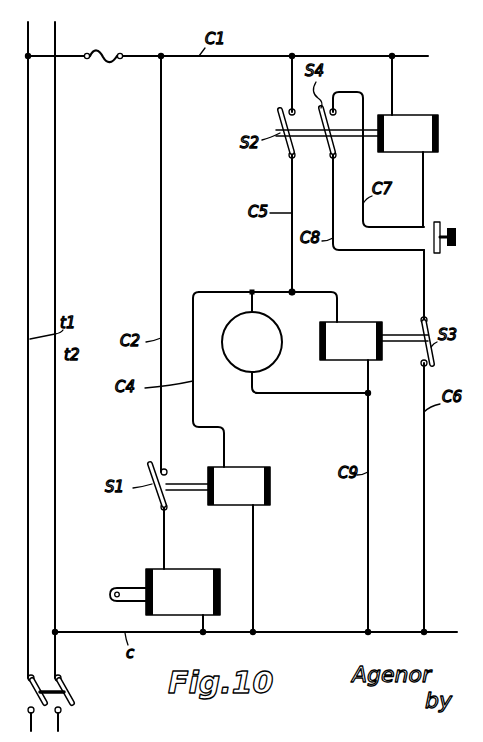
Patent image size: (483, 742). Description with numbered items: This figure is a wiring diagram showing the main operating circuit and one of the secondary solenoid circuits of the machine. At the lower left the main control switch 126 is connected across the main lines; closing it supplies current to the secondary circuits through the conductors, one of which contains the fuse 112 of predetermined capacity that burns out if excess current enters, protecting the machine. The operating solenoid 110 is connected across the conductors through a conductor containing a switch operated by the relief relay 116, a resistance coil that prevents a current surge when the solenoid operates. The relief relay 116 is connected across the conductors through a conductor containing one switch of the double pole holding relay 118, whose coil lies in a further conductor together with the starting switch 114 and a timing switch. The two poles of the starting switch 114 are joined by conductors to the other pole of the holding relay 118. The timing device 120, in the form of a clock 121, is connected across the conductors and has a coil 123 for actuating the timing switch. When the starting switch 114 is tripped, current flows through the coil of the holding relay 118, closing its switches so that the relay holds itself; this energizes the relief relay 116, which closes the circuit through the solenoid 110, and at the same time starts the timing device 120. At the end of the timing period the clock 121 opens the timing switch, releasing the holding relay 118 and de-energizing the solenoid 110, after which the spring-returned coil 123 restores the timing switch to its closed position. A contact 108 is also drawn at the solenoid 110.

The fuse 112 is at (107, 57).
The holding relay 118 is at (408, 133).
The starting switch 114 is at (443, 226).
The timing device 120 is at (288, 290).
The timing clock 121 is at (252, 342).
The coil 123 is at (351, 341).
The relief relay 116 is at (239, 486).
The operating solenoid 110 is at (183, 592).
The plug contact 108 is at (122, 588).
The main control switch 126 is at (73, 692).